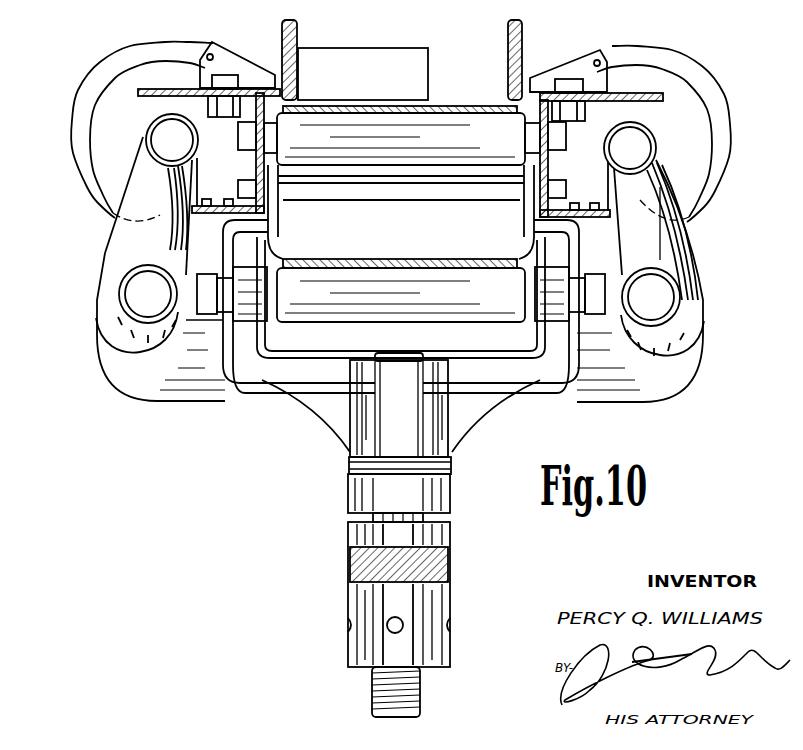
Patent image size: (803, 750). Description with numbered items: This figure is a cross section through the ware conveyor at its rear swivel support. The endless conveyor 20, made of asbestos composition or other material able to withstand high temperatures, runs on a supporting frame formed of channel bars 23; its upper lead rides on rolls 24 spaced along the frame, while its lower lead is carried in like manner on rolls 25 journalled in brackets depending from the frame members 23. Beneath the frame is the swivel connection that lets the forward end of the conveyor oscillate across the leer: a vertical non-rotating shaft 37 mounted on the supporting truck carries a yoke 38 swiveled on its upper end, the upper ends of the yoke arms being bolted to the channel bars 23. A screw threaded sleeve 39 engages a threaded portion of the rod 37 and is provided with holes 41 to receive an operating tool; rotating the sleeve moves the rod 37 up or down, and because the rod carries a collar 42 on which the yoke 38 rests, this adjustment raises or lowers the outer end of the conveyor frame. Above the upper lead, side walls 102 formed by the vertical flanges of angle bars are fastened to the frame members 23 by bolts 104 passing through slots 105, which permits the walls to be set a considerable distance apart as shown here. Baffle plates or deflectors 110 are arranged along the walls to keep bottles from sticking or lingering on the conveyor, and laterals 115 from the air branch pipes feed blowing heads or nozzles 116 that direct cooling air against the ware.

The laterals 115 is at (111, 66).
The blowing heads or nozzles 116 is at (256, 76).
The baffle plates or deflectors 110 is at (369, 57).
The side walls 102 is at (522, 34).
The slots 105 is at (173, 90).
The bolts 104 is at (168, 110).
The endless conveyor 20 is at (442, 106).
The channel bars 23 is at (253, 166).
The rolls 24 is at (400, 156).
The rolls 25 is at (478, 311).
The vertical non-rotating shaft 37 is at (398, 354).
The yoke 38 is at (302, 417).
The collar 42 is at (347, 494).
The holes 41 is at (347, 626).
The screw threaded sleeve 39 is at (347, 648).